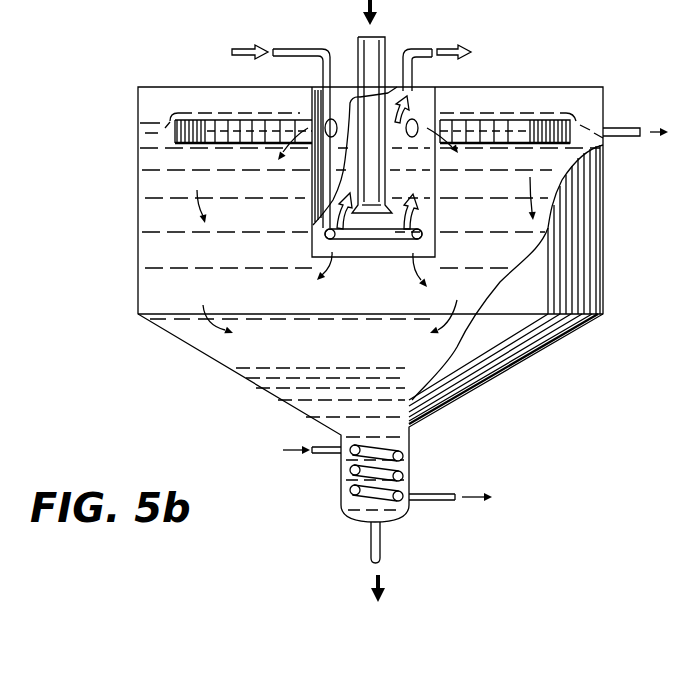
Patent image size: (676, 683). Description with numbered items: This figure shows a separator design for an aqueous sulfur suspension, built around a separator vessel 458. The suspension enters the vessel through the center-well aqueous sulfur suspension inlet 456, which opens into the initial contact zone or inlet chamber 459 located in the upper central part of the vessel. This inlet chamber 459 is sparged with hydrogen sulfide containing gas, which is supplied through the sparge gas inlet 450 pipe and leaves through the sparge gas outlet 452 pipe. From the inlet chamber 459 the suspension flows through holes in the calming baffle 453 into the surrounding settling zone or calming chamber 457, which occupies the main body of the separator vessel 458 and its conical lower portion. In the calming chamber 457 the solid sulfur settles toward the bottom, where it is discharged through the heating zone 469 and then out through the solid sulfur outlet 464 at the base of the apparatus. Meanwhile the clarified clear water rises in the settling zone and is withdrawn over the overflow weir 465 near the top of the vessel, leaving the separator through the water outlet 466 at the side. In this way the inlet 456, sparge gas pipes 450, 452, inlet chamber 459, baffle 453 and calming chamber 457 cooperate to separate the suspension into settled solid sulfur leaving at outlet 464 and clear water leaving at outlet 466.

The sparge gas inlet 450 is at (322, 66).
The sparge gas outlet 452 is at (413, 63).
The calming baffle 453 is at (437, 221).
The aqueous sulfur suspension inlet 456 is at (388, 46).
The calming chamber 457 is at (386, 344).
The separator vessel 458 is at (608, 212).
The inlet chamber 459 is at (412, 179).
The solid sulfur outlet 464 is at (382, 546).
The overflow weir 465 is at (598, 142).
The water outlet 466 is at (626, 130).
The heating zone 469 is at (409, 446).